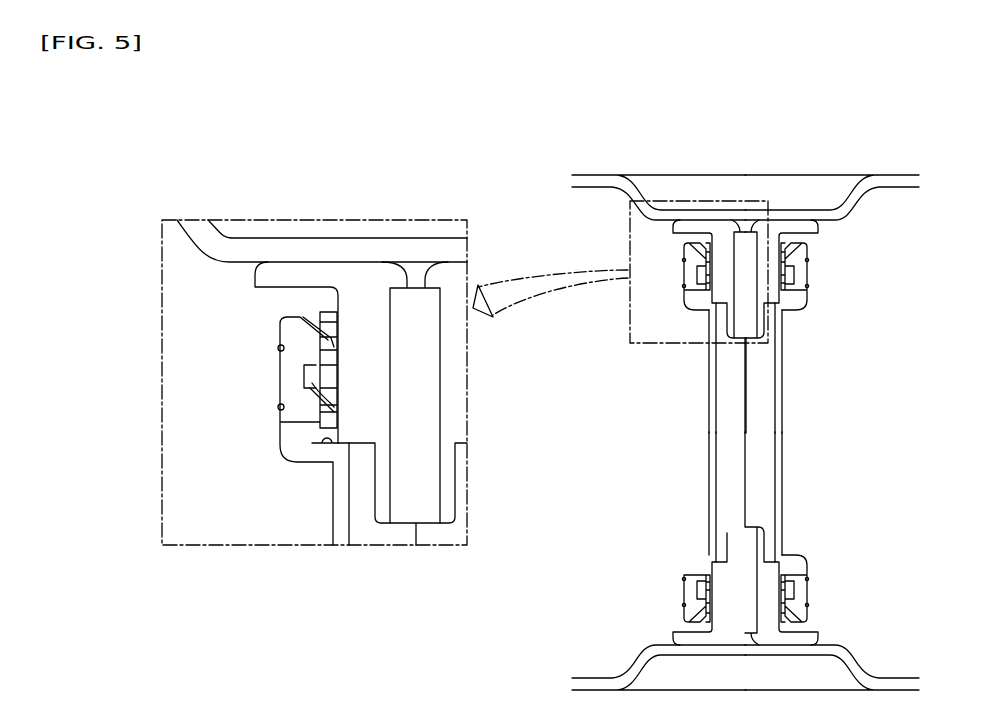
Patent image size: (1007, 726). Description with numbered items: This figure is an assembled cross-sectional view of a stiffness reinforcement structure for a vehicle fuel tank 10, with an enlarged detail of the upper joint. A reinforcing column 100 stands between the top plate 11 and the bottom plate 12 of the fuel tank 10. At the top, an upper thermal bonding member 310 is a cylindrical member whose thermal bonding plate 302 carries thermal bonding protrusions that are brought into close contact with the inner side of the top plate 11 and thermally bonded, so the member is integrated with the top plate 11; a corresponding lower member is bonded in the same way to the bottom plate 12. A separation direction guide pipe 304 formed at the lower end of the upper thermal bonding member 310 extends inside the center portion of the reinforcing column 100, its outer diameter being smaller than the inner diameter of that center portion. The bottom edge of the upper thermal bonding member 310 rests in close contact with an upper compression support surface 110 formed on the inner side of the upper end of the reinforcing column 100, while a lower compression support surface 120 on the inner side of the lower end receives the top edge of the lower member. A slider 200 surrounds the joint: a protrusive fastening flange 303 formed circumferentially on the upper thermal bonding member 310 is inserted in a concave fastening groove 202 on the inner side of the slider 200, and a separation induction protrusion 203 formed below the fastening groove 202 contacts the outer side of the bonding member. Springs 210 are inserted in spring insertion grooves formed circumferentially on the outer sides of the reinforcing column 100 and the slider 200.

The fuel tank 10 is at (753, 385).
The top plate 11 is at (898, 180).
The bottom plate 12 is at (880, 684).
The reinforcing column 100 is at (697, 443).
The upper compression support surface 110 is at (331, 447).
The lower compression support surface 120 is at (798, 567).
The slider 200 is at (226, 404).
The fastening groove 202 is at (275, 413).
The separation induction protrusion 203 is at (328, 413).
The spring 210 is at (278, 405).
The thermal bonding plate 302 is at (349, 252).
The fastening flange 303 is at (323, 375).
The separation direction guide pipe 304 is at (380, 512).
The upper thermal bonding member 310 is at (283, 270).